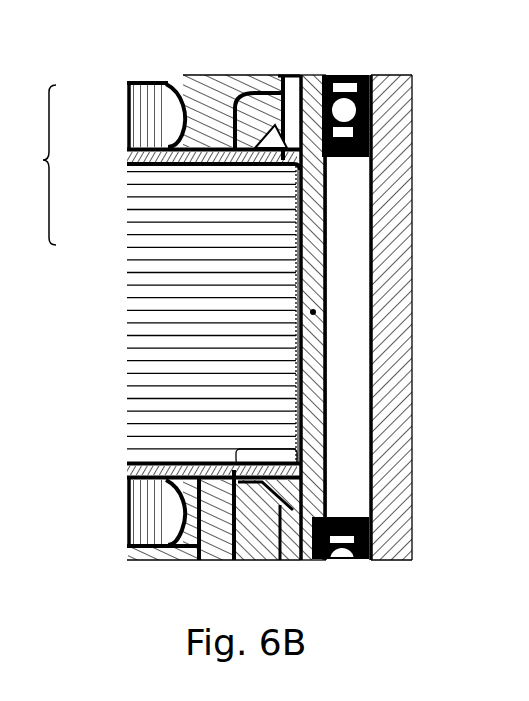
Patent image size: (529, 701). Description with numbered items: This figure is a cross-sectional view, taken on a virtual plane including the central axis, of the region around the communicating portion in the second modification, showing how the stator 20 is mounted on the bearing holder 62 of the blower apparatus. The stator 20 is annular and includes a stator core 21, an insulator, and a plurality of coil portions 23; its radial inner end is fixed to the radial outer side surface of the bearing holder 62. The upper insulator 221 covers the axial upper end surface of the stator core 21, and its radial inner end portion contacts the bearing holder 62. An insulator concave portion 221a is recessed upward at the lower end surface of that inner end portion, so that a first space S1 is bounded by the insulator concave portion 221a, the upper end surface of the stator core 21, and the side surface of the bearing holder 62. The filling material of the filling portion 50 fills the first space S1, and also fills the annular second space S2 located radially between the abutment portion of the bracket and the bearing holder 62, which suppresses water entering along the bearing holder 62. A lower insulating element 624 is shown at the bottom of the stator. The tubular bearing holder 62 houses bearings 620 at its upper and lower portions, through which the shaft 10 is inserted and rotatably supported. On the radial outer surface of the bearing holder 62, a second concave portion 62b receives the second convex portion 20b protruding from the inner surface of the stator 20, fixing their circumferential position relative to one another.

The shaft 10 is at (388, 75).
The stator 20 is at (36, 165).
The stator core 21 is at (148, 228).
The upper insulator 221 is at (150, 158).
The insulator concave portion 221a is at (265, 97).
The coil portions 23 is at (140, 112).
The filling portion 50 is at (298, 275).
The bearing holder 62 is at (306, 76).
The bearing 620 is at (340, 75).
The second concave portion 62b is at (322, 312).
The second convex portion 20b is at (320, 328).
The lower insulating frame 624 is at (248, 478).
The first space S1 is at (228, 98).
The second space S2 is at (268, 484).